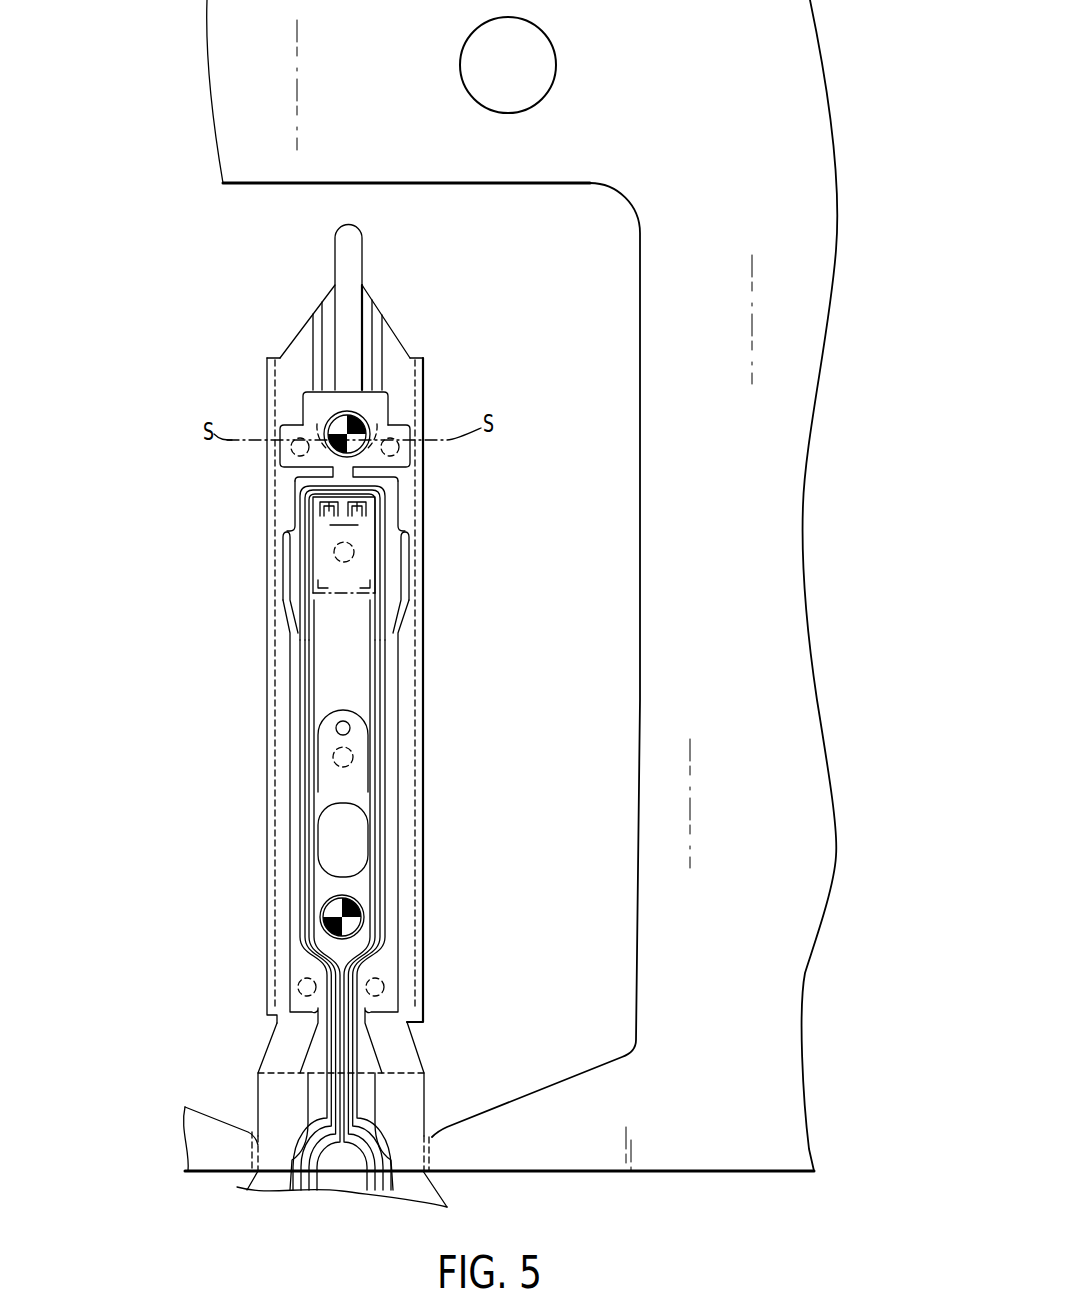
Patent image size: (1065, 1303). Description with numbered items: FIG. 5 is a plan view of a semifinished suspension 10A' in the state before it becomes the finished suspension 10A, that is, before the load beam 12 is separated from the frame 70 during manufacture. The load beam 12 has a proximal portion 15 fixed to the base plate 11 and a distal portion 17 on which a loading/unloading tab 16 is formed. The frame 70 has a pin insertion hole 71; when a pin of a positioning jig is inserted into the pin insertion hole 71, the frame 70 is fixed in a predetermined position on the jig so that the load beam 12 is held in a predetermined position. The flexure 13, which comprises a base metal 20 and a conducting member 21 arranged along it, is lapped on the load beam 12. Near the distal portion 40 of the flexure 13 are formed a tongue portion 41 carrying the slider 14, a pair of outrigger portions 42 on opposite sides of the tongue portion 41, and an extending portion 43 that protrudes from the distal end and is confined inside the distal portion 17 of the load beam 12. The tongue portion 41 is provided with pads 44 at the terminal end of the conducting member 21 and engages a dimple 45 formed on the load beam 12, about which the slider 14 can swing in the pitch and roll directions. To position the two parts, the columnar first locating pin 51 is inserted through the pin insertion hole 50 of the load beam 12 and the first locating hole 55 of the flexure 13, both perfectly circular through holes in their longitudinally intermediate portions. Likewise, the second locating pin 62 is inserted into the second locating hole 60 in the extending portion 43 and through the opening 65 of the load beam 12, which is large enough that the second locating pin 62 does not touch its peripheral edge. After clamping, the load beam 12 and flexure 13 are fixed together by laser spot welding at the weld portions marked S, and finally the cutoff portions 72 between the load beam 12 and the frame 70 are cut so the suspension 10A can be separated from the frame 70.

The suspension 10A is at (566, 537).
The semifinished suspension 10A' is at (854, 476).
The base plate 11 is at (418, 1192).
The load beam 12 is at (258, 677).
The flexure 13 is at (408, 703).
The slider 14 is at (376, 578).
The proximal portion 15 is at (421, 1054).
The loading/unloading tab 16 is at (352, 244).
The distal portion 17 is at (368, 295).
The base metal 20 is at (350, 777).
The conducting member 21 is at (375, 780).
The distal portion 40 is at (424, 457).
The tongue portion 41 is at (353, 537).
The outrigger portions 42 is at (283, 565).
The extending portion 43 is at (305, 405).
The pads 44 is at (338, 503).
The dimple 45 is at (338, 552).
The pin insertion hole 50 is at (330, 928).
The first locating pin 51 is at (350, 910).
The first locating hole 55 is at (360, 930).
The second locating hole 60 is at (335, 412).
The second locating pin 62 is at (355, 427).
The opening 65 is at (378, 396).
The frame 70 is at (792, 665).
The pin insertion hole 71 is at (546, 80).
The cutoff portions 72 is at (235, 1120).